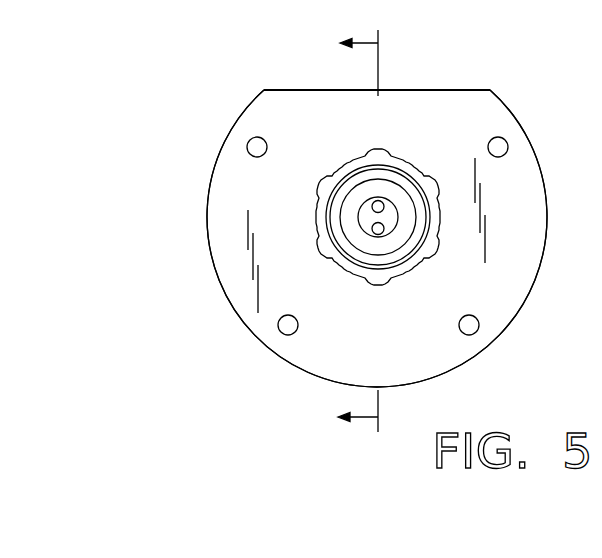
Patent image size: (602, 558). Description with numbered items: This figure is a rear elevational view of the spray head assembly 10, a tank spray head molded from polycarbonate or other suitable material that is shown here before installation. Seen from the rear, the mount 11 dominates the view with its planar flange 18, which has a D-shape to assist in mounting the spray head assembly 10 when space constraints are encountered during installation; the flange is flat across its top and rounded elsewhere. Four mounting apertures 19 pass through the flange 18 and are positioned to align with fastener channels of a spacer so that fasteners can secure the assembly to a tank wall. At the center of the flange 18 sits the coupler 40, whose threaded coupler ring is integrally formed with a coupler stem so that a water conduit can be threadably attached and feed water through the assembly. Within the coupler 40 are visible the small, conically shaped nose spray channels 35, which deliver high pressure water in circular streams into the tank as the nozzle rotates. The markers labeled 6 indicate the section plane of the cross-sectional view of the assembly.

The spray head assembly 10 is at (210, 57).
The mount 11 is at (295, 106).
The mount planar flange 18 is at (530, 258).
The mounting apertures 19 is at (509, 135).
The nose spray channels 35 is at (373, 194).
The coupler 40 is at (297, 207).
The section line 6- 6 is at (370, 231).